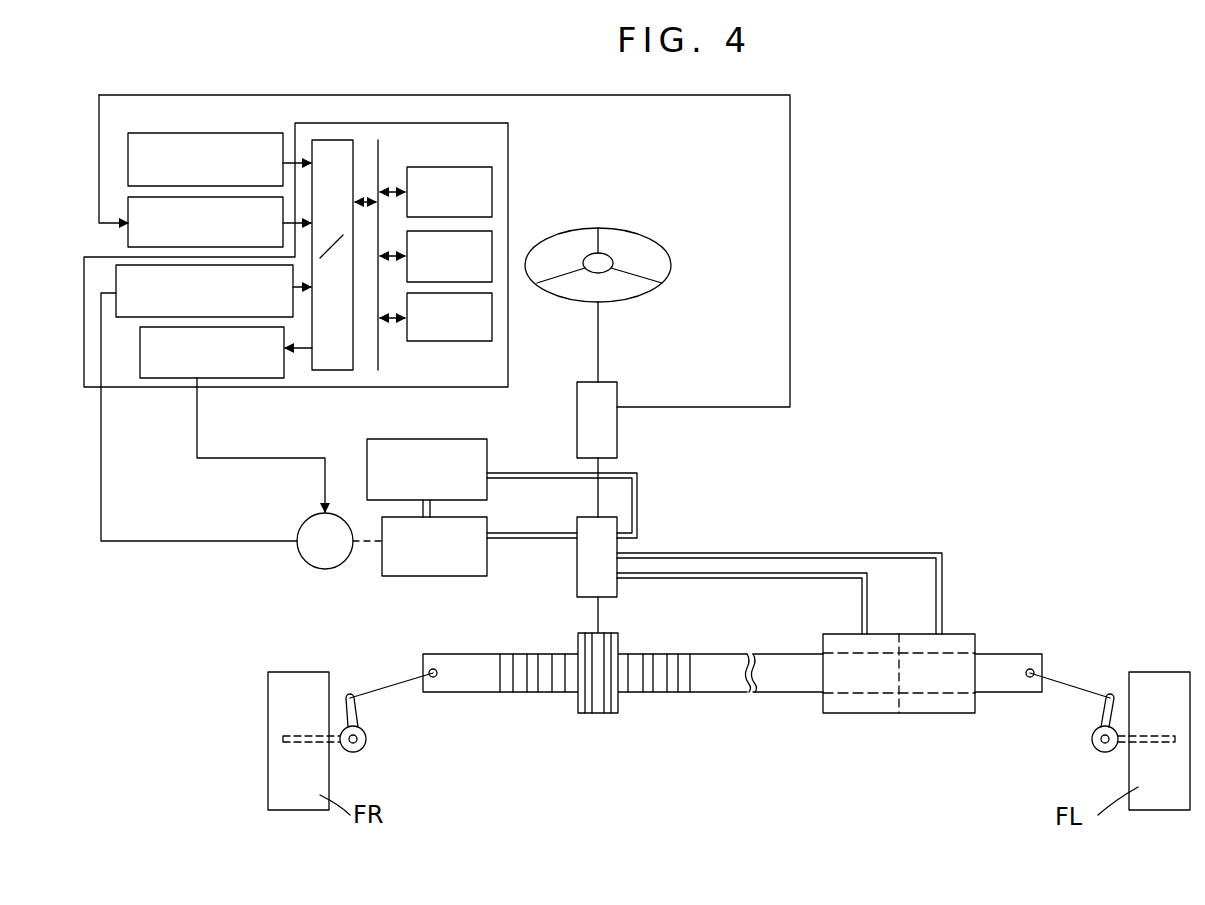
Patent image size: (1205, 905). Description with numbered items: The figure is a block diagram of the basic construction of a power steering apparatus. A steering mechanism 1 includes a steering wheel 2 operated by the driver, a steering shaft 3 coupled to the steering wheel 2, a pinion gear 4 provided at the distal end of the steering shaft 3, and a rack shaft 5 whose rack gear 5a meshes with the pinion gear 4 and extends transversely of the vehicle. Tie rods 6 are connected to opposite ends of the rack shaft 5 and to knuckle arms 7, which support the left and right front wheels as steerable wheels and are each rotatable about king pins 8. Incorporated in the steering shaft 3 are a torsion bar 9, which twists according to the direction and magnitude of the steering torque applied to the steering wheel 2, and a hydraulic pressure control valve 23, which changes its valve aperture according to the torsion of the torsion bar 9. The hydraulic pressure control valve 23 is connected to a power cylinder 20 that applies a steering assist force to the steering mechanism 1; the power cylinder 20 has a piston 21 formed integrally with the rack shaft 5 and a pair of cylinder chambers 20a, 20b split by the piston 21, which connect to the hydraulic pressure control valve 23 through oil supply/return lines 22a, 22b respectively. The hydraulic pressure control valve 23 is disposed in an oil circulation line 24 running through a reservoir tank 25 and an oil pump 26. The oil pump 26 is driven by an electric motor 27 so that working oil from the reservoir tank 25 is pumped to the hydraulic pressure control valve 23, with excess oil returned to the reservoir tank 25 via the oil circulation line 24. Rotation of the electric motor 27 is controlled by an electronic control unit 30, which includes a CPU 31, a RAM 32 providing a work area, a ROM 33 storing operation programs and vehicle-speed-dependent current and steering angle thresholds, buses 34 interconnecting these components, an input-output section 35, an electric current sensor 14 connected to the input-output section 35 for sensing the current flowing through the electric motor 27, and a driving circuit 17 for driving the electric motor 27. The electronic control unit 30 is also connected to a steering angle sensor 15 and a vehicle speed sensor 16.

The steering mechanism 1 is at (695, 396).
The steering wheel 2 is at (634, 232).
The steering shaft 3 is at (598, 360).
The pinion gear 4 is at (590, 713).
The rack shaft 5 is at (722, 683).
The rack gear 5a is at (548, 688).
The tie rods 6 is at (385, 688).
The knuckle arms 7 is at (370, 745).
The king pins 8 is at (355, 750).
The torsion bar 9 is at (617, 428).
The electric current sensor 14 is at (113, 277).
The steering angle sensor 15 is at (125, 240).
The vehicle speed sensor 16 is at (186, 133).
The driving circuit 17 is at (165, 380).
The power cylinder 20 is at (965, 634).
The cylinder chamber 20a is at (873, 703).
The cylinder chamber 20b is at (950, 703).
The piston 21 is at (899, 713).
The oil supply/return line 22a is at (795, 578).
The oil supply/return line 22b is at (820, 553).
The hydraulic pressure control valve 23 is at (577, 562).
The oil circulation line 24 is at (637, 505).
The reservoir tank 25 is at (410, 440).
The oil pump 26 is at (417, 576).
The electric motor 27 is at (300, 548).
The electronic control unit 30 is at (483, 122).
The CPU 31 is at (492, 183).
The RAM 32 is at (492, 310).
The ROM 33 is at (492, 243).
The buses 34 is at (380, 352).
The input-output section 35 is at (338, 140).